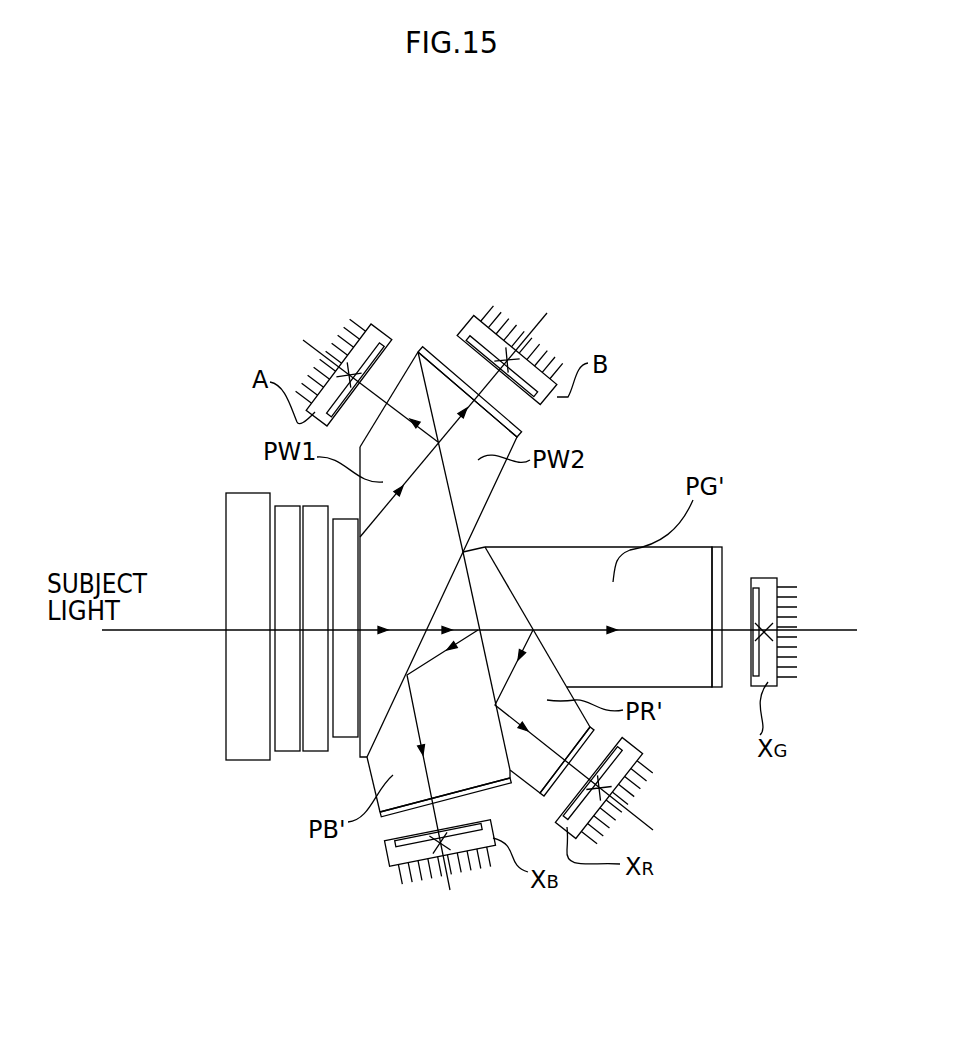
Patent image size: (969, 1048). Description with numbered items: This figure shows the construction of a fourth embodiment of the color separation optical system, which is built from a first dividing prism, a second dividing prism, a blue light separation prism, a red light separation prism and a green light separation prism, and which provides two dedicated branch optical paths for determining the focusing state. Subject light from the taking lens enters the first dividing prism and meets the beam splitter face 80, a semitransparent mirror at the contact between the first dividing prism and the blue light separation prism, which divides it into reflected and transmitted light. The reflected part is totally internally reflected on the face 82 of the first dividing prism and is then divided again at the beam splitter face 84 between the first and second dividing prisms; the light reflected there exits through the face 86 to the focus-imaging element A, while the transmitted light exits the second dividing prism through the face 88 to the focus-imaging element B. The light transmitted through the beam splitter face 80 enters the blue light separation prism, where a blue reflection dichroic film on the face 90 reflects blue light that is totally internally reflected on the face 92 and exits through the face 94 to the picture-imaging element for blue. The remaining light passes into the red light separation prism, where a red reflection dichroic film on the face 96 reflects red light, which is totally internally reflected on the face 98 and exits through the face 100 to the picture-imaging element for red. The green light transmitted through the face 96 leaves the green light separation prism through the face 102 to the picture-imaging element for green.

The beam splitter face 80 is at (407, 673).
The face of the first dividing prism 82 is at (377, 582).
The beam splitter face 84 is at (445, 508).
The face of the first dividing prism 86 is at (400, 375).
The face of the second dividing prism 88 is at (445, 368).
The face of the blue light separation prism 90 is at (503, 740).
The face of the blue light separation prism 92 is at (395, 770).
The face of the blue light separation prism 94 is at (410, 812).
The face of the red light separation prism 96 is at (510, 595).
The face of the red light separation prism 98 is at (485, 657).
The face of the red light separation prism 100 is at (580, 745).
The face of the green light separation prism 102 is at (725, 590).